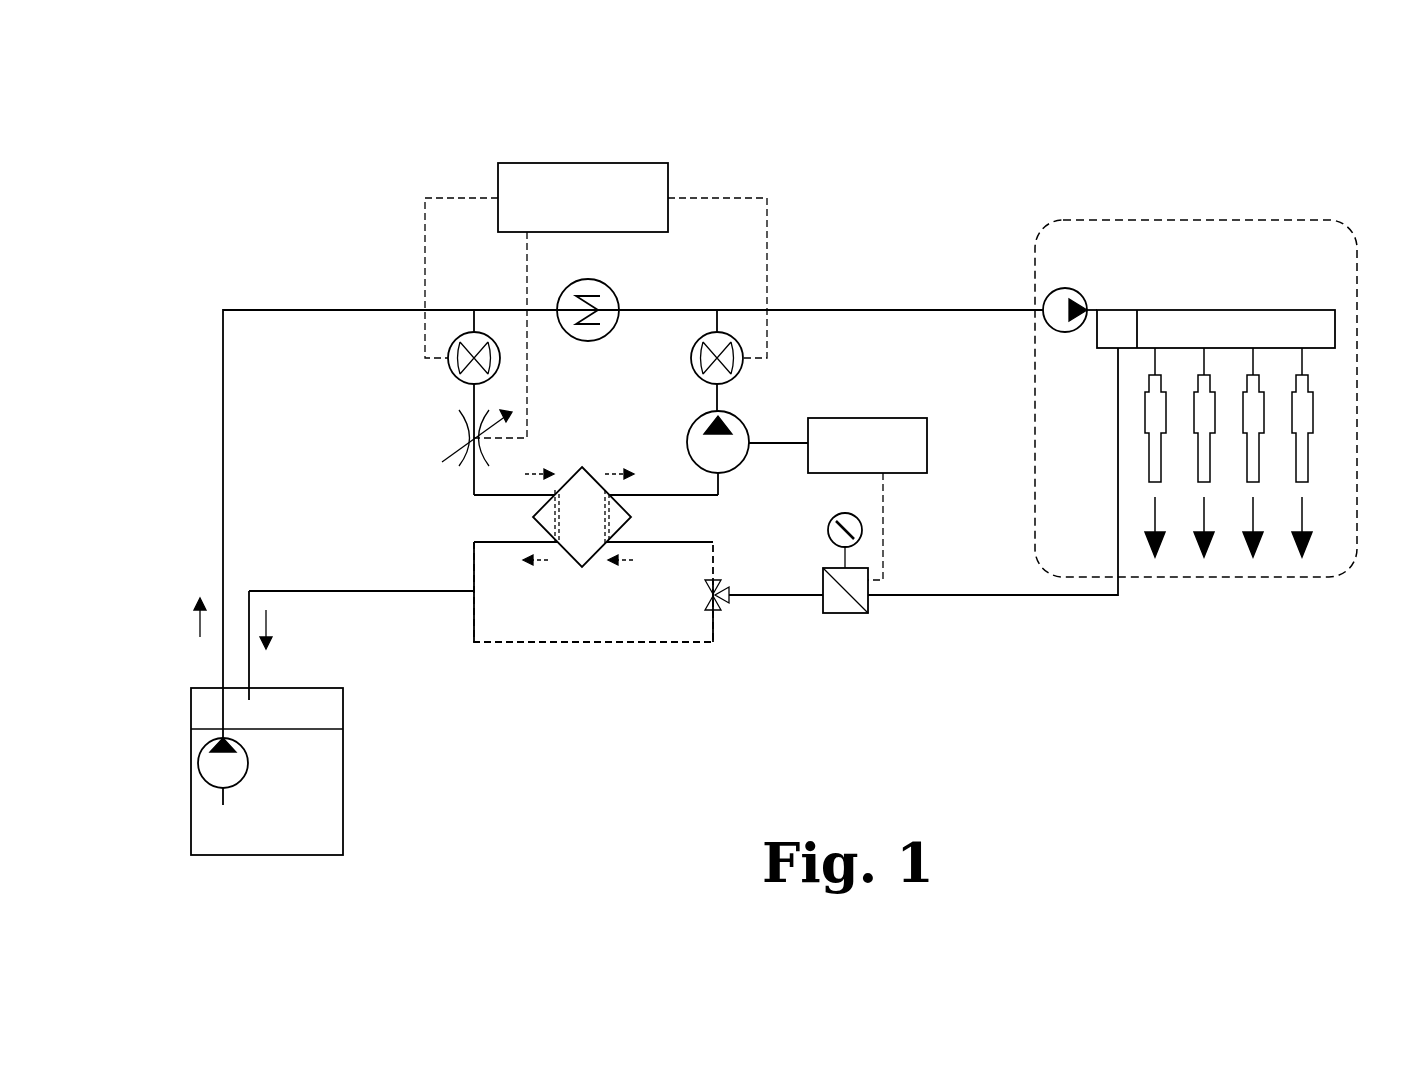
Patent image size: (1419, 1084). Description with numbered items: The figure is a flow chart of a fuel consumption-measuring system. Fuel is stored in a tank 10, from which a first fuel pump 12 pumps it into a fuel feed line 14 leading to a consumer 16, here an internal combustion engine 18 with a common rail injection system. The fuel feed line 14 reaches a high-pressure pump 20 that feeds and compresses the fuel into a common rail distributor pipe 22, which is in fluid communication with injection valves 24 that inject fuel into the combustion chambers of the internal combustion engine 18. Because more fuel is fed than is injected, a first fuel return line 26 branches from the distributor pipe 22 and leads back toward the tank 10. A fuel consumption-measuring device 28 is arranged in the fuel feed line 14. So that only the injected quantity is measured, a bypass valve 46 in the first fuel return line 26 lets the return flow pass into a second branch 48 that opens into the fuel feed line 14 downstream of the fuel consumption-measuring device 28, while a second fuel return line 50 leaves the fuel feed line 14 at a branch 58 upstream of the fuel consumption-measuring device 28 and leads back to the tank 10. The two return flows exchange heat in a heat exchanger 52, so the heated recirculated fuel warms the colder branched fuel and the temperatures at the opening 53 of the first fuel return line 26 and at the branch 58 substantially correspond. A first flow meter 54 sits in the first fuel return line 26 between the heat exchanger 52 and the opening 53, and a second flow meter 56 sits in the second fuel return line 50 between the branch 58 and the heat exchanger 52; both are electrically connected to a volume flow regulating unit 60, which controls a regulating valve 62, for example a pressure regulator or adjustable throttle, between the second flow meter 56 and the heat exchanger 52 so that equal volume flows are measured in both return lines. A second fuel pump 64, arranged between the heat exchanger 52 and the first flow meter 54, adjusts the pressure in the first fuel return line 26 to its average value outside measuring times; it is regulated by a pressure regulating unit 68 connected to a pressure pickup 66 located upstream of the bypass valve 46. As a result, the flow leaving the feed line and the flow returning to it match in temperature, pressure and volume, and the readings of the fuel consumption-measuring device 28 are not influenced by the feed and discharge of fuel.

The tank 10 is at (313, 815).
The first fuel pump 12 is at (207, 768).
The fuel feed line 14 is at (285, 309).
The consumer 16 is at (1196, 356).
The internal combustion engine 18 is at (1232, 220).
The high-pressure pump 20 is at (1060, 297).
The common rail distributor pipe 22 is at (1257, 322).
The injection valves 24 is at (1303, 410).
The first fuel return line 26 is at (1118, 590).
The fuel consumption-measuring device 28 is at (606, 297).
The bypass valve 46 is at (706, 596).
The second branch 48 is at (683, 542).
The second fuel return line 50 is at (503, 542).
The heat exchanger 52 is at (583, 478).
The opening 53 is at (717, 307).
The first flow meter 54 is at (692, 361).
The second flow meter 56 is at (455, 378).
The branch 58 is at (473, 307).
The volume flow regulating unit 60 is at (600, 185).
The regulating valve 62 is at (473, 434).
The second fuel pump 64 is at (695, 445).
The pressure pickup 66 is at (870, 595).
The pressure regulating unit 68 is at (889, 438).